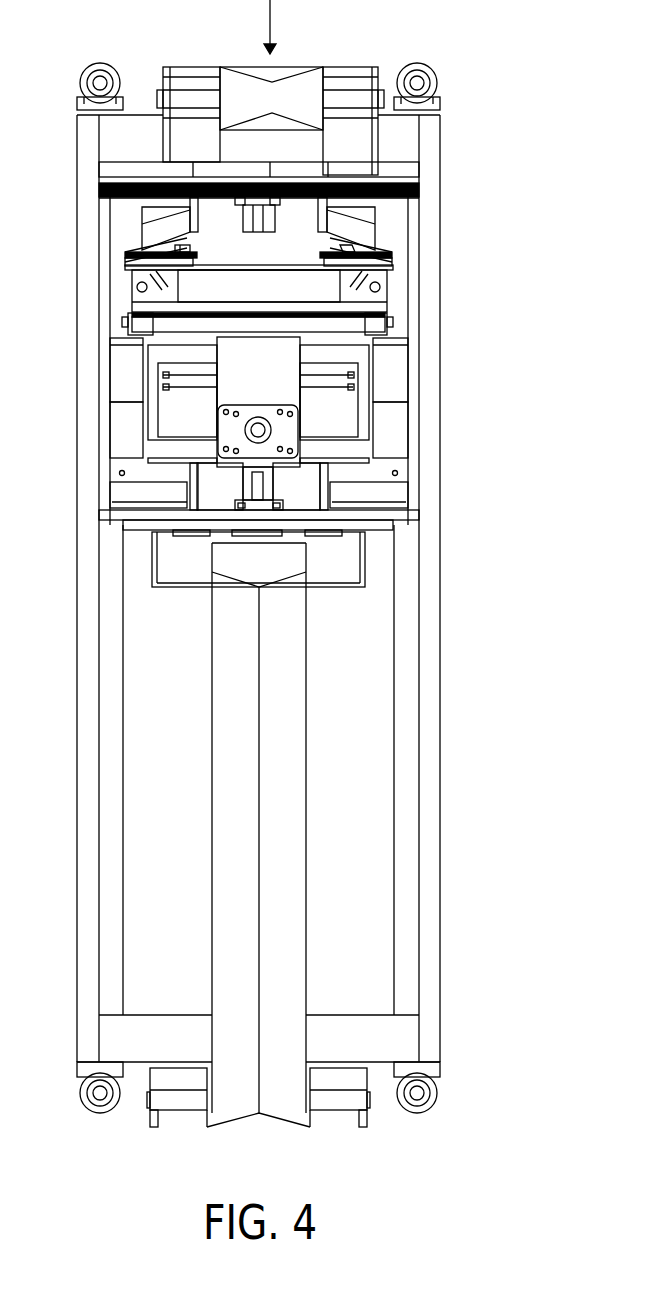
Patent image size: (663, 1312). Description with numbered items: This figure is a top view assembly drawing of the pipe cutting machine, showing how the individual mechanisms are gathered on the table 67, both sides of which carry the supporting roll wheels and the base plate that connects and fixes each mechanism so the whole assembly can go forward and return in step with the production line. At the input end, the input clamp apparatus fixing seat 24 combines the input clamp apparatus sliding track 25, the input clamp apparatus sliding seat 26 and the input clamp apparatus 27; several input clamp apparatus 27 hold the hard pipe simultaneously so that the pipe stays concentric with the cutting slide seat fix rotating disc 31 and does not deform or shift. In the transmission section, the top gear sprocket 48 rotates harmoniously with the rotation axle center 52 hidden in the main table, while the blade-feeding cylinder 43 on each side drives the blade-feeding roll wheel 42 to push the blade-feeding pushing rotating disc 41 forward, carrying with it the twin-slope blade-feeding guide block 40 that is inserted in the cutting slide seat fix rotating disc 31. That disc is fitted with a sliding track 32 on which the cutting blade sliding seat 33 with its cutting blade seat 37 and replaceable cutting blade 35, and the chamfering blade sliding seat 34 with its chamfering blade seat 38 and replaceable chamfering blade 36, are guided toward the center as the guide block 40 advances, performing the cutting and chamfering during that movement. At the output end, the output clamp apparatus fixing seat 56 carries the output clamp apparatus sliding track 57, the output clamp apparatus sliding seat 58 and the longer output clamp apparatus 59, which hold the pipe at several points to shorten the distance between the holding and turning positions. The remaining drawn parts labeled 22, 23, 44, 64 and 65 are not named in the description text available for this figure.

The drive wheel 22 is at (292, 72).
The drive housing 23 is at (375, 68).
The input clamp apparatus fixing seat 24 is at (190, 215).
The input clamp apparatus sliding track 25 is at (240, 200).
The input clamp apparatus sliding seat 26 is at (352, 215).
The input clamp apparatus 27 is at (183, 170).
The cutting slide seat fix rotating disc 31 is at (130, 267).
The sliding track 32 is at (385, 268).
The cutting blade sliding seat 33 is at (128, 254).
The chamfering blade sliding seat 34 is at (392, 252).
The replaceable cutting blade 35 is at (177, 248).
The replaceable chamfering blade 36 is at (337, 240).
The cutting blade seat 37 is at (128, 252).
The chamfering blade seat 38 is at (353, 247).
The twin-slope blade-feeding guide block 40 is at (142, 292).
The blade-feeding pushing rotating disc 41 is at (112, 342).
The blade-feeding roll wheel 42 is at (387, 320).
The blade-feeding cylinder 43 is at (398, 383).
The cross bar 44 is at (227, 432).
The top gear sprocket 48 is at (197, 388).
The rotation axle center 52 is at (330, 413).
The output clamp apparatus fixing seat 56 is at (212, 515).
The output clamp apparatus sliding track 57 is at (373, 507).
The output clamp apparatus sliding seat 58 is at (163, 495).
The output clamp apparatus 59 is at (357, 485).
The spindle shaft 64 is at (292, 655).
The bottom support 65 is at (365, 1080).
The table 67 is at (412, 742).